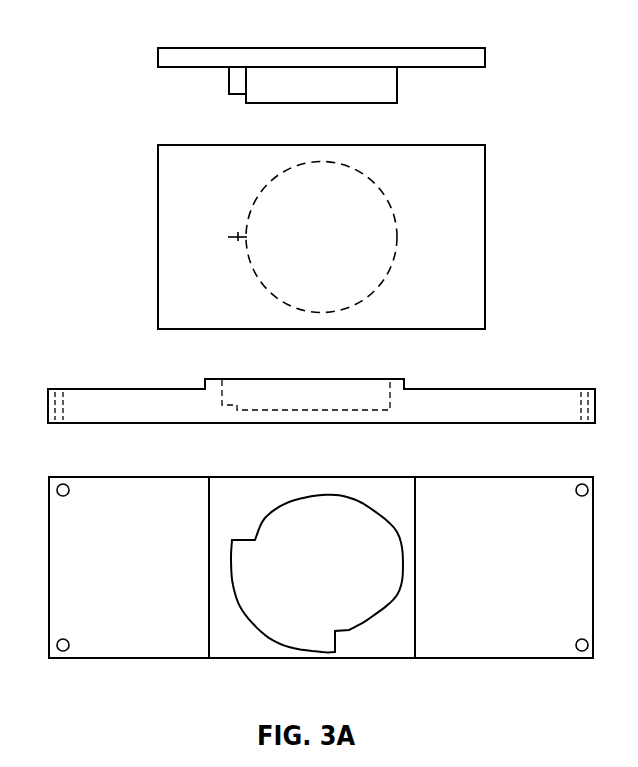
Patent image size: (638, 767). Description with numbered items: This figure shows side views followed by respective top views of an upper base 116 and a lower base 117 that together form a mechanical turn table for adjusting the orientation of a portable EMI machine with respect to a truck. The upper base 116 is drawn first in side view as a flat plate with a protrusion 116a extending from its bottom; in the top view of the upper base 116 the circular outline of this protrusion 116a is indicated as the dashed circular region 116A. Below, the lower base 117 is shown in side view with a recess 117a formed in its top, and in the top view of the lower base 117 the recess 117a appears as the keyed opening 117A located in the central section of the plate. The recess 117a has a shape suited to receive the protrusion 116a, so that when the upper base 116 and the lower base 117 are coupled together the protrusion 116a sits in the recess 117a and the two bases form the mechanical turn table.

The upper base 116 is at (236, 48).
The protrusion 116a is at (385, 81).
The circular region of cover plate 116A is at (350, 249).
The lower base 117 is at (118, 389).
The recess 117a is at (365, 386).
The keyed opening of mounting plate 117A is at (350, 582).